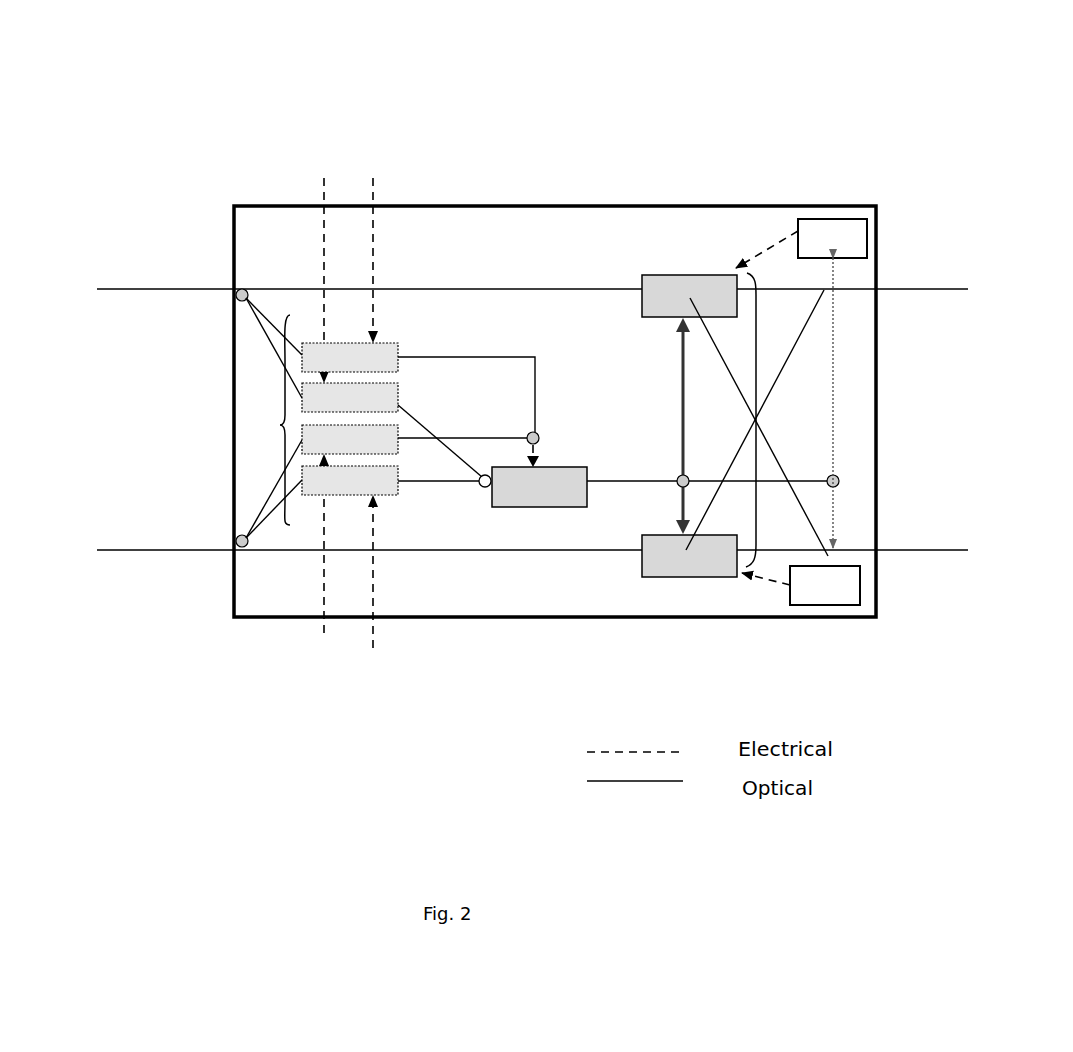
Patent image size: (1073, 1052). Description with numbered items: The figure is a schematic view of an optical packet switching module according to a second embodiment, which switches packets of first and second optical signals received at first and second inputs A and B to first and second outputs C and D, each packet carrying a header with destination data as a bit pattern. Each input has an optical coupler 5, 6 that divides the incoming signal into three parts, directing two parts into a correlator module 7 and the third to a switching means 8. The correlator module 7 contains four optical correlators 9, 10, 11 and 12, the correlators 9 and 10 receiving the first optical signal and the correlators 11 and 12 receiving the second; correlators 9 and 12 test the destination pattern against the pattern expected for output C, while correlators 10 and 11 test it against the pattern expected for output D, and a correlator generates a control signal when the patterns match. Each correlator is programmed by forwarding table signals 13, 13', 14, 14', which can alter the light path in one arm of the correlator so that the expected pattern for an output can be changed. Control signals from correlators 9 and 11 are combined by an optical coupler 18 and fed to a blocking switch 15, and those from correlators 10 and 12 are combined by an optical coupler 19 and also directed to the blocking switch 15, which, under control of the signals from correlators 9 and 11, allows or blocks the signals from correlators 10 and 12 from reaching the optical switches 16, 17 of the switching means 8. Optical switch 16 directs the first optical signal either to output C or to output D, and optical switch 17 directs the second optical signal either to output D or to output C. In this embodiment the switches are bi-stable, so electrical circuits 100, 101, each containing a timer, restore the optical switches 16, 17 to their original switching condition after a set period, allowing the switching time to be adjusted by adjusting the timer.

The first input A is at (532, 266).
The second input B is at (532, 525).
The first output C is at (905, 266).
The second output D is at (907, 526).
The optical coupler 5 is at (250, 288).
The optical coupler 6 is at (247, 554).
The correlator module 7 is at (282, 426).
The switching means 8 is at (760, 418).
The optical correlator 9 is at (404, 351).
The optical correlator 10 is at (404, 387).
The optical correlator 11 is at (402, 443).
The optical correlator 12 is at (403, 491).
The forwarding table signal 13 is at (396, 199).
The forwarding table signal 13' is at (289, 203).
The forwarding table signal 14 is at (383, 654).
The forwarding table signal 14' is at (300, 639).
The blocking switch 15 is at (583, 509).
The optical switch 16 is at (683, 272).
The optical switch 17 is at (682, 582).
The optical coupler 18 is at (539, 434).
The optical coupler 19 is at (488, 473).
The electrical circuit 100 is at (870, 222).
The electrical circuit 101 is at (870, 578).